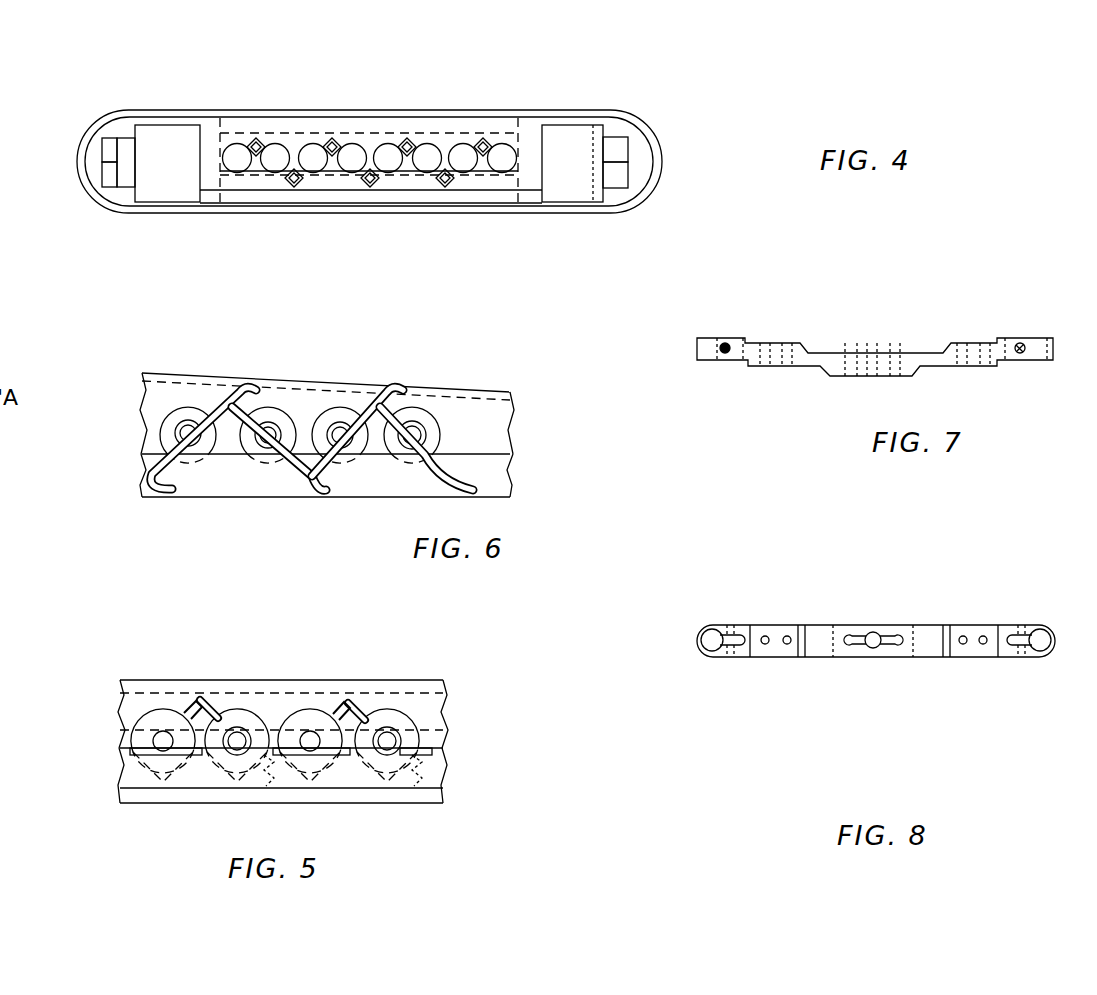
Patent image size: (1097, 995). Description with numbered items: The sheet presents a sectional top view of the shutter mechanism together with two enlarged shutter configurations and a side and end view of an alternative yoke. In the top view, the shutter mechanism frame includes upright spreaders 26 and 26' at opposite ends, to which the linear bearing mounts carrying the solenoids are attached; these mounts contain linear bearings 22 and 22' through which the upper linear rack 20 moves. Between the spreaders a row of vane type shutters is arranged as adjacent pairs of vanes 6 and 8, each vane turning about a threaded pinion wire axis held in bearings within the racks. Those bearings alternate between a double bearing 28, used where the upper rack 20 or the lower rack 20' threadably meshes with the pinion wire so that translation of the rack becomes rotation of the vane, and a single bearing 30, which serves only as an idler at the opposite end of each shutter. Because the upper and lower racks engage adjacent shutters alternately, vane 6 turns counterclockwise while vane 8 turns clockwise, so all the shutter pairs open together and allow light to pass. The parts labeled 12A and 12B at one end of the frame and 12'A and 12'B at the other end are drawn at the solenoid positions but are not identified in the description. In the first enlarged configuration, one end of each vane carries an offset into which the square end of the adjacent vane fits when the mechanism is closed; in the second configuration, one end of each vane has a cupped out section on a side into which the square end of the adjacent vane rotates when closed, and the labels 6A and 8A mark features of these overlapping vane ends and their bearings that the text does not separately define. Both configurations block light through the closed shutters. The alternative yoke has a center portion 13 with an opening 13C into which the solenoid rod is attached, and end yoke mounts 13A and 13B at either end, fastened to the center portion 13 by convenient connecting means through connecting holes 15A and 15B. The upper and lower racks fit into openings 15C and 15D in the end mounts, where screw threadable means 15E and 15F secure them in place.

In FIG. 4, the vane 6 is at (403, 153).
In FIG. 5, the vane 6 is at (332, 697).
In FIG. 6, the spring clip arm 6A is at (373, 388).
In FIG. 4, the vane 8 is at (438, 158).
In FIG. 5, the vane 8 is at (367, 723).
In FIG. 6, the socket ring 8A is at (397, 410).
In FIG. 4, the terminal block upper 12A is at (95, 147).
In FIG. 4, the terminal block lower 12B is at (111, 180).
In FIG. 4, the terminal block upper (right) 12'A is at (671, 131).
In FIG. 4, the terminal block lower (right) 12'B is at (663, 185).
In FIG. 7, the center portion 13 is at (910, 352).
In FIG. 8, the center portion 13 is at (876, 641).
In FIG. 7, the end yoke mount 13A is at (752, 337).
In FIG. 7, the end yoke mount 13B is at (1000, 336).
In FIG. 7, the opening 13C is at (877, 357).
In FIG. 8, the opening 13C is at (872, 652).
In FIG. 7, the connecting hole 15A is at (767, 347).
In FIG. 8, the connecting hole 15A is at (765, 647).
In FIG. 7, the connecting hole 15B is at (962, 347).
In FIG. 8, the connecting hole 15B is at (963, 647).
In FIG. 7, the opening 15C is at (710, 360).
In FIG. 8, the opening 15C is at (712, 637).
In FIG. 7, the opening 15D is at (1033, 360).
In FIG. 8, the opening 15D is at (1040, 637).
In FIG. 7, the screw threadable means 15E is at (740, 360).
In FIG. 8, the screw threadable means 15E is at (750, 627).
In FIG. 7, the screw threadable means 15F is at (1023, 360).
In FIG. 8, the screw threadable means 15F is at (1000, 633).
In FIG. 6, the upper linear rack 20 is at (327, 387).
In FIG. 5, the upper linear rack 20 is at (283, 689).
In FIG. 6, the lower linear rack 20' is at (326, 500).
In FIG. 5, the lower linear rack 20' is at (246, 775).
In FIG. 4, the linear bearing 22 is at (203, 123).
In FIG. 4, the linear bearing 22' is at (619, 135).
In FIG. 4, the upright spreader 26 is at (364, 133).
In FIG. 4, the upright spreader 26' is at (572, 133).
In FIG. 4, the double bearing 28 is at (505, 158).
In FIG. 5, the double bearing 28 is at (397, 733).
In FIG. 4, the single bearing 30 is at (310, 158).
In FIG. 5, the single bearing 30 is at (303, 730).